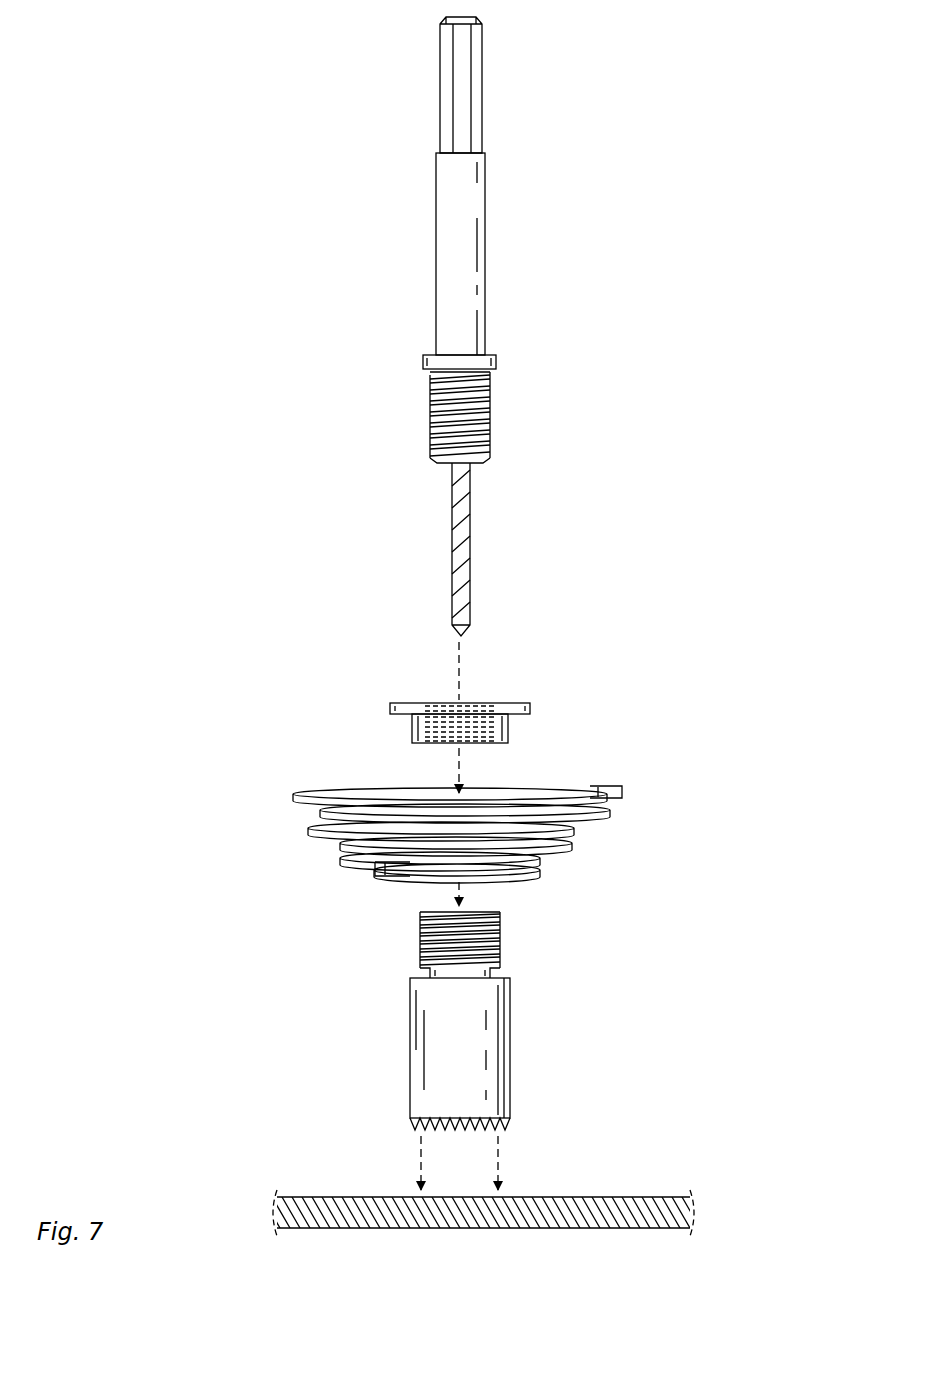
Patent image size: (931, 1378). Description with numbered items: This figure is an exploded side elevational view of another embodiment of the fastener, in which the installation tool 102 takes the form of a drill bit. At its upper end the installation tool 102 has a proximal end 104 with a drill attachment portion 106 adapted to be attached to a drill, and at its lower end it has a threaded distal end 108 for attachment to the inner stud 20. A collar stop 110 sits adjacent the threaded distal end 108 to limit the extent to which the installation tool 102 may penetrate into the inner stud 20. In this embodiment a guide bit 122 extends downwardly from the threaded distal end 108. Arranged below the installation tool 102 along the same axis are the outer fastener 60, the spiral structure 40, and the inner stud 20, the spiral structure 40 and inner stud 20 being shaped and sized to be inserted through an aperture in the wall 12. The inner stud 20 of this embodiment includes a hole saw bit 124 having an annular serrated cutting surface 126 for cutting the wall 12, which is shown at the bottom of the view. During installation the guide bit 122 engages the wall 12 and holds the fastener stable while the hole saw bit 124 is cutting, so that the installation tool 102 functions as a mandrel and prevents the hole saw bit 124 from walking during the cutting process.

The proximal end 104 is at (481, 20).
The drill attachment portion 106 is at (463, 93).
The installation tool 102 is at (484, 279).
The collar stop 110 is at (496, 360).
The threaded distal end 108 is at (489, 437).
The guide bit 122 is at (469, 548).
The outer fastener 60 is at (508, 730).
The spiral structure 40 is at (610, 816).
The inner stud 20 is at (499, 960).
The hole saw bit 124 is at (508, 1040).
The annular serrated cutting surface 126 is at (498, 1130).
The wall 12 is at (612, 1197).